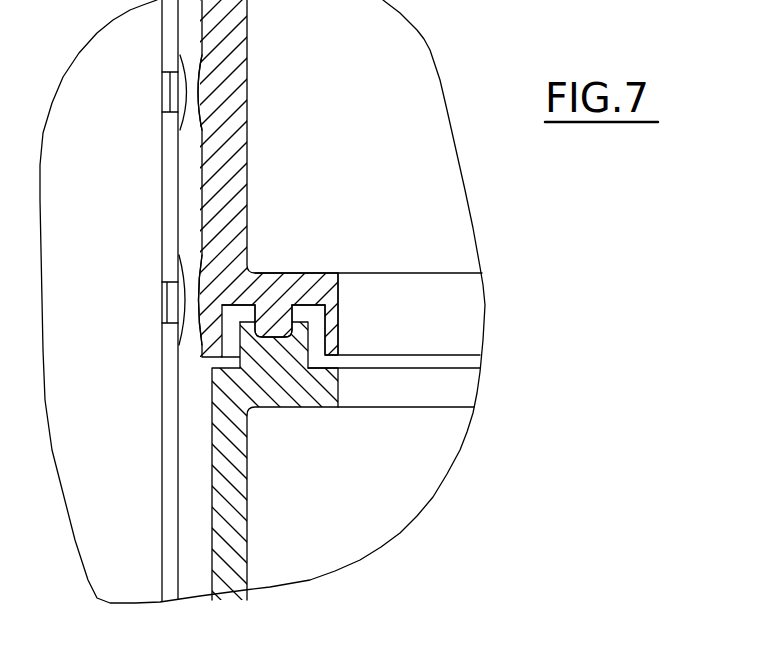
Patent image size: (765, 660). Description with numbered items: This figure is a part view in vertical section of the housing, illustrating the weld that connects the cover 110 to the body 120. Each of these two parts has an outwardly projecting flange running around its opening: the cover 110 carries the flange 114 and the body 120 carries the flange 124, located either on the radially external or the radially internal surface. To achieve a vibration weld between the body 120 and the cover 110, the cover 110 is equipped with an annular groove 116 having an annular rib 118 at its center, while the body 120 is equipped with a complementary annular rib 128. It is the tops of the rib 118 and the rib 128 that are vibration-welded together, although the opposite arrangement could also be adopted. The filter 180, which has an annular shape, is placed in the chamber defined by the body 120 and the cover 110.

The cover 110 is at (237, 100).
The flange 114 is at (275, 292).
The annular groove 116 is at (333, 332).
The annular rib 118 is at (270, 323).
The body 120 is at (233, 533).
The flange 124 is at (273, 392).
The annular rib 128 is at (278, 352).
The filter 180 is at (175, 177).